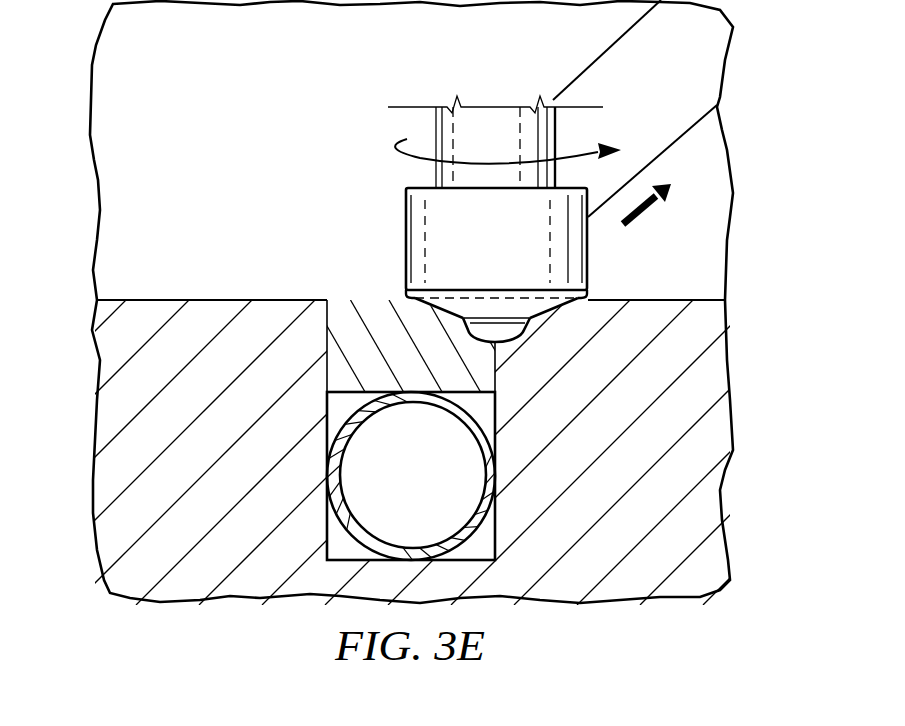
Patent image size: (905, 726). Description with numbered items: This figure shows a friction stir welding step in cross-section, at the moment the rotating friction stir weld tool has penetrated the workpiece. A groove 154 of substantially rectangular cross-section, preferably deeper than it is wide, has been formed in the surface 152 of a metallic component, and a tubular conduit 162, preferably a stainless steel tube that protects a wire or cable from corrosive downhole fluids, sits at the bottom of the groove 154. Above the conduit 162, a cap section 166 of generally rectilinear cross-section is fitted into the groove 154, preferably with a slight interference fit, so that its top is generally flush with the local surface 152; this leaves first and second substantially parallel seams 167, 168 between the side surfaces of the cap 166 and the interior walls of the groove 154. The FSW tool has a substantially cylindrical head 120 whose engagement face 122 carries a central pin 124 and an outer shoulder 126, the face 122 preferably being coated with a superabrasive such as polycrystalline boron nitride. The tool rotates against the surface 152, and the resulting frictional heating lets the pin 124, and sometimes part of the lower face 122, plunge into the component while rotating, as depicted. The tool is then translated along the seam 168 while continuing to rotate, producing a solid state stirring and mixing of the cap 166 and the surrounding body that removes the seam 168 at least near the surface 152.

The head 120 is at (406, 212).
The engagement face 122 is at (540, 314).
The central pin 124 is at (505, 344).
The outer shoulder 126 is at (578, 300).
The surface 152 is at (123, 222).
The groove 154 is at (323, 548).
The tubular conduit 162 is at (494, 527).
The cap section 166 is at (357, 364).
The first seam 167 is at (582, 72).
The second seam 168 is at (676, 142).